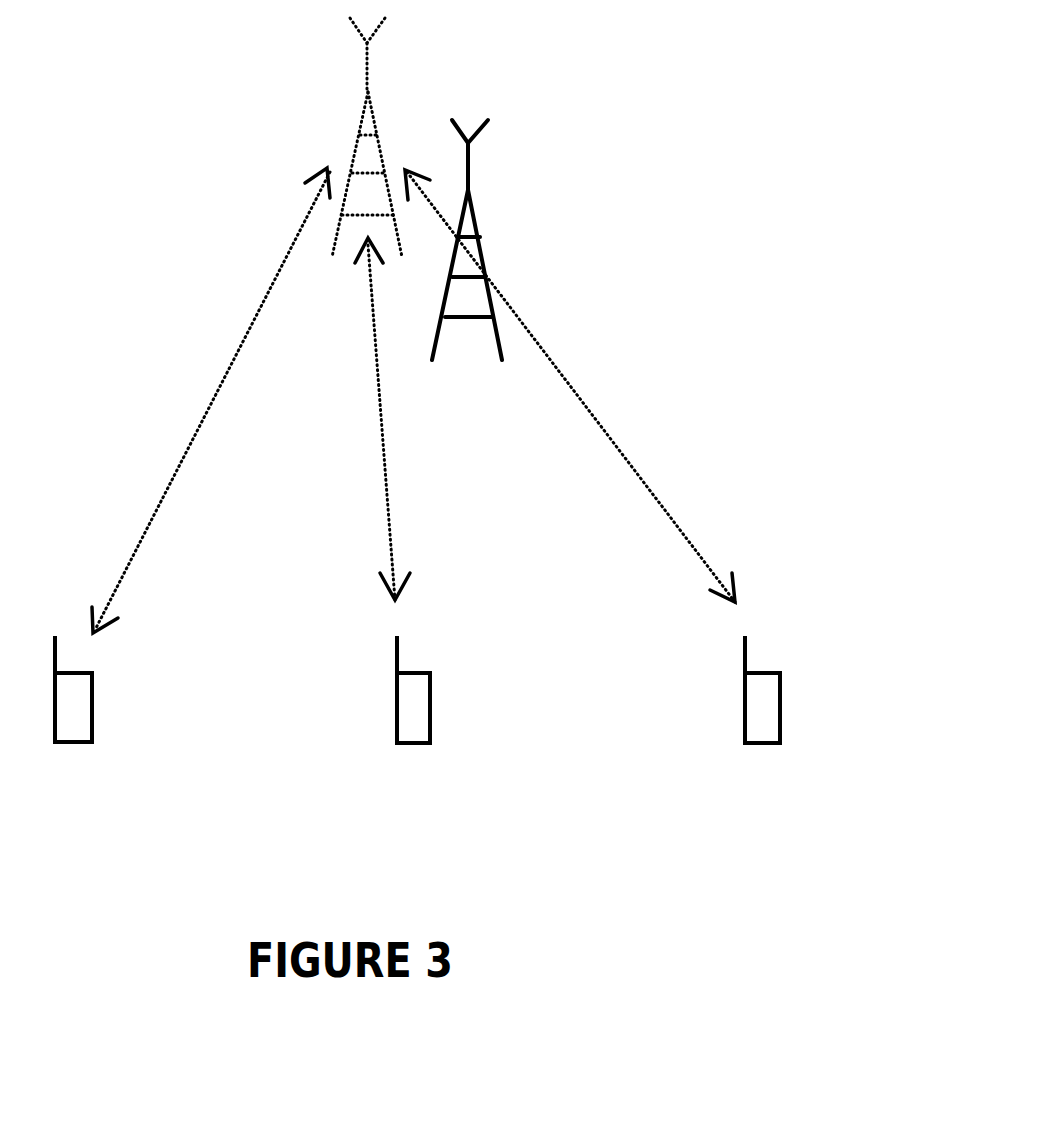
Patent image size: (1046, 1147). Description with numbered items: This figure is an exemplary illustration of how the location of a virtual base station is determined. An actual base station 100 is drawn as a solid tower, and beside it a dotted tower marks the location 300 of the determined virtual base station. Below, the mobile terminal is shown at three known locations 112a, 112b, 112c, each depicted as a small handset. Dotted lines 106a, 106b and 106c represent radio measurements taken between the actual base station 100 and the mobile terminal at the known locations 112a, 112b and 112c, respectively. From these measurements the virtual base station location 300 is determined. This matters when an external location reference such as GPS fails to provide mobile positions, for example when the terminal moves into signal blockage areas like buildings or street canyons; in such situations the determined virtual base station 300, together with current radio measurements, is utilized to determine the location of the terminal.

The virtual base station location 300 is at (335, 83).
The actual base station 100 is at (534, 240).
The radio measurement 106a is at (211, 400).
The radio measurement 106b is at (397, 419).
The radio measurement 106c is at (570, 386).
The known location of mobile terminal 112a is at (161, 687).
The known location of mobile terminal 112b is at (502, 689).
The known location of mobile terminal 112c is at (847, 690).